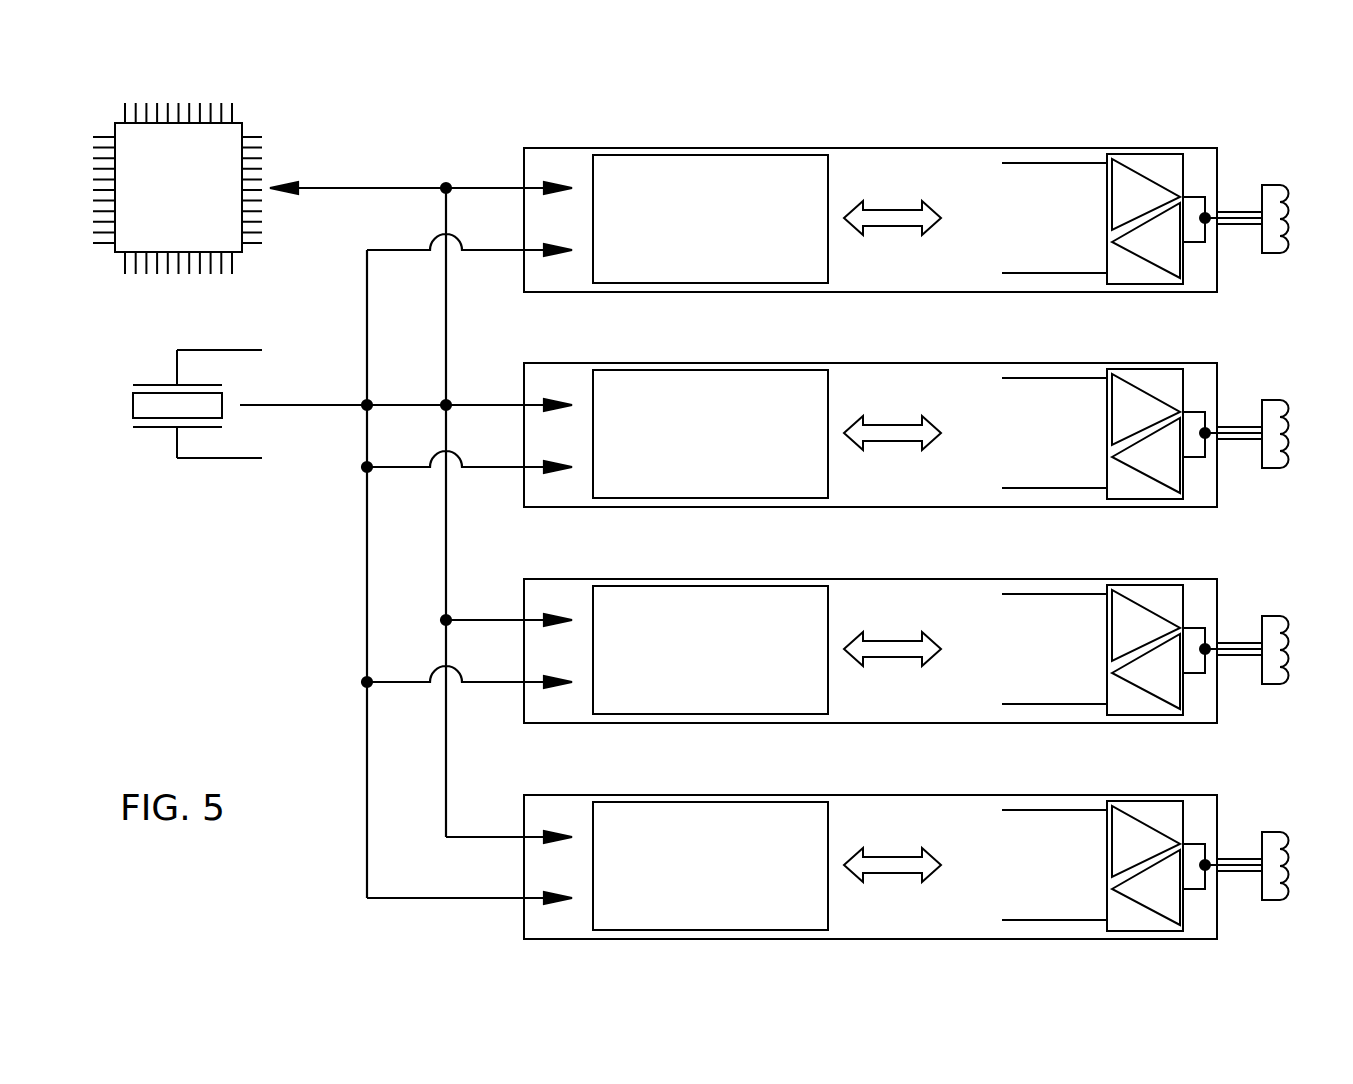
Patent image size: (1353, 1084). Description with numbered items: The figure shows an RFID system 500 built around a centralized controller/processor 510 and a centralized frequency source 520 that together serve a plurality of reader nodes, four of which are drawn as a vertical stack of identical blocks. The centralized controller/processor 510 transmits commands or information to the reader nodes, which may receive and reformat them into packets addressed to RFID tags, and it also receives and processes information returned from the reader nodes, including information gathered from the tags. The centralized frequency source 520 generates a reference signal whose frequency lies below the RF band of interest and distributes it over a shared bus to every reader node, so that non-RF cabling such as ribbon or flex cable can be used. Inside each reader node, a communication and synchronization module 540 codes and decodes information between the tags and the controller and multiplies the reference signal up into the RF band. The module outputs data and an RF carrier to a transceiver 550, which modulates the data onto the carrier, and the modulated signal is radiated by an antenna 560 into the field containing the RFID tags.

The RFID system 500 is at (703, 505).
The centralized controller/processor 510 is at (224, 140).
The centralized frequency source 520 is at (135, 410).
The communication and synchronization module 540 is at (680, 168).
The transceiver 550 is at (1125, 160).
The antenna 560 is at (1276, 187).